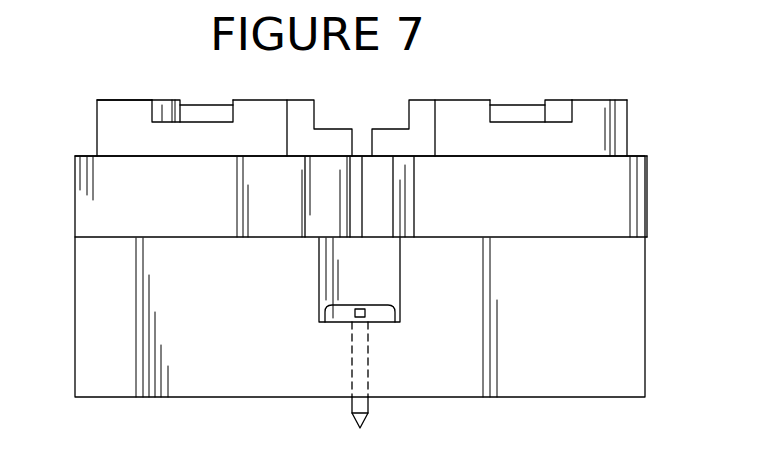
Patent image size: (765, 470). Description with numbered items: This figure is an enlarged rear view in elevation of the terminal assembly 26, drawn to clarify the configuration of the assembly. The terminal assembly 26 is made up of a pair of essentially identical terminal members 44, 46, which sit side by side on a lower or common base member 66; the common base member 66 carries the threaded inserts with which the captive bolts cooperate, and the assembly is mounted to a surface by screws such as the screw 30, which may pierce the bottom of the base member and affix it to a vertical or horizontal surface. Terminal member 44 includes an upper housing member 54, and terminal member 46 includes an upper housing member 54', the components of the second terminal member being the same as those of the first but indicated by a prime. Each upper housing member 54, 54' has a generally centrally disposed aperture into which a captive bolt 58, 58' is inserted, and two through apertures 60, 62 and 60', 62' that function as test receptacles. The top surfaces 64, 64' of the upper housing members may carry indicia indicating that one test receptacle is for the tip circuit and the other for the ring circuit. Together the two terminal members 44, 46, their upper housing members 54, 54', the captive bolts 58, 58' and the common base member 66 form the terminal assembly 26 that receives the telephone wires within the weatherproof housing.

The terminal assembly 26 is at (59, 359).
The screw 30 is at (370, 405).
The terminal member 44 is at (656, 219).
The terminal member 46 is at (58, 192).
The upper housing member 54 is at (651, 120).
The upper housing member 54' is at (93, 128).
The captive bolt 58 is at (530, 91).
The captive bolt 58' is at (192, 91).
The through aperture 60 is at (599, 108).
The through aperture 60' is at (116, 73).
The through aperture 62 is at (462, 80).
The through aperture 62' is at (260, 108).
The top surface 64 is at (403, 115).
The top surface 64' is at (326, 118).
The common base member 66 is at (93, 237).